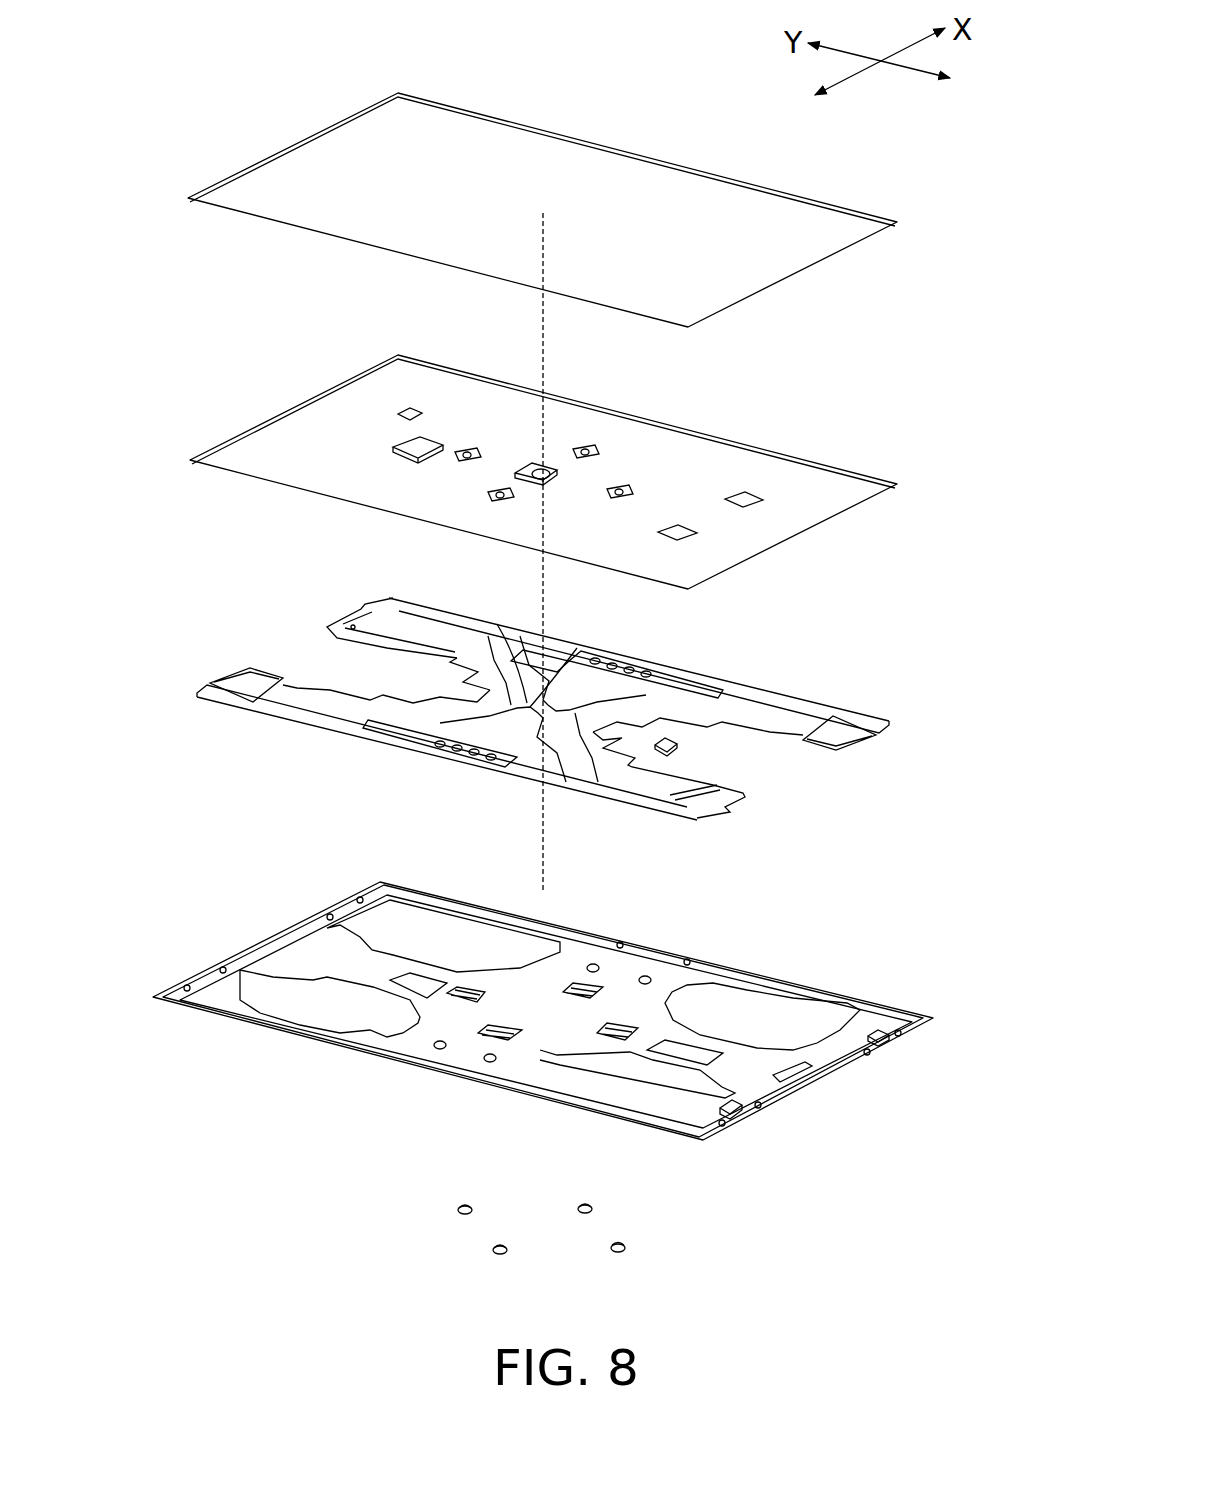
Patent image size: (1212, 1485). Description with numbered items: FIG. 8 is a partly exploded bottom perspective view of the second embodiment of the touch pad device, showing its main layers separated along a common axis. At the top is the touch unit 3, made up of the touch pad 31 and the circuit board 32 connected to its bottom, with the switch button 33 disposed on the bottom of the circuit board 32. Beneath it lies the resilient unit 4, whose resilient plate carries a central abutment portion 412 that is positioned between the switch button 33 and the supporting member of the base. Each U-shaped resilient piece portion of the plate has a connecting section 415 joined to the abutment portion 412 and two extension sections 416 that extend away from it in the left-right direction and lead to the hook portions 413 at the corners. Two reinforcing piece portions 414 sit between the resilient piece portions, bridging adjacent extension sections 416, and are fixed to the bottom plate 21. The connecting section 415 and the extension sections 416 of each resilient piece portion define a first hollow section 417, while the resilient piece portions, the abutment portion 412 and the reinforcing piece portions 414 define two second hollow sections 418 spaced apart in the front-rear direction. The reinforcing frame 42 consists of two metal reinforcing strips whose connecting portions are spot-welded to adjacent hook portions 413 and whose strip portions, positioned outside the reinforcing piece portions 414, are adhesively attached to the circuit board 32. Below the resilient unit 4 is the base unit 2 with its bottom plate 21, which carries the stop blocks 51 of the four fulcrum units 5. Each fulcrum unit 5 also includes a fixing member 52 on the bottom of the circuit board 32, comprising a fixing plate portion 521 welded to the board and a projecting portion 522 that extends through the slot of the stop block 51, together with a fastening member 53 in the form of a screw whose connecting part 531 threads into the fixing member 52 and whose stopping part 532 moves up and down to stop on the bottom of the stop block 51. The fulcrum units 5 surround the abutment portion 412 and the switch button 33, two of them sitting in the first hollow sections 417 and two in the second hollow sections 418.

The base unit 2 is at (576, 1034).
The bottom plate 21 is at (717, 985).
The touch unit 3 is at (598, 341).
The touch pad 31 is at (833, 240).
The circuit board 32 is at (579, 455).
The switch button 33 is at (527, 468).
The resilient unit 4 is at (557, 722).
The reinforcing frame 42 is at (798, 696).
The abutment portion 412 is at (527, 703).
The hook portions 413 is at (208, 683).
The reinforcing piece portions 414 is at (560, 656).
The connecting section 415 is at (503, 703).
The extension sections 416 is at (425, 635).
The first hollow sections 417 is at (460, 690).
The second hollow sections 418 is at (568, 697).
The fulcrum units 5 is at (587, 1262).
The stop block 51 is at (454, 998).
The fixing member 52 is at (610, 411).
The fixing plate portion 521 is at (602, 452).
The projecting portion 522 is at (588, 452).
The fastening member 53 is at (712, 1238).
The connecting part 531 is at (624, 1245).
The stopping part 532 is at (625, 1249).